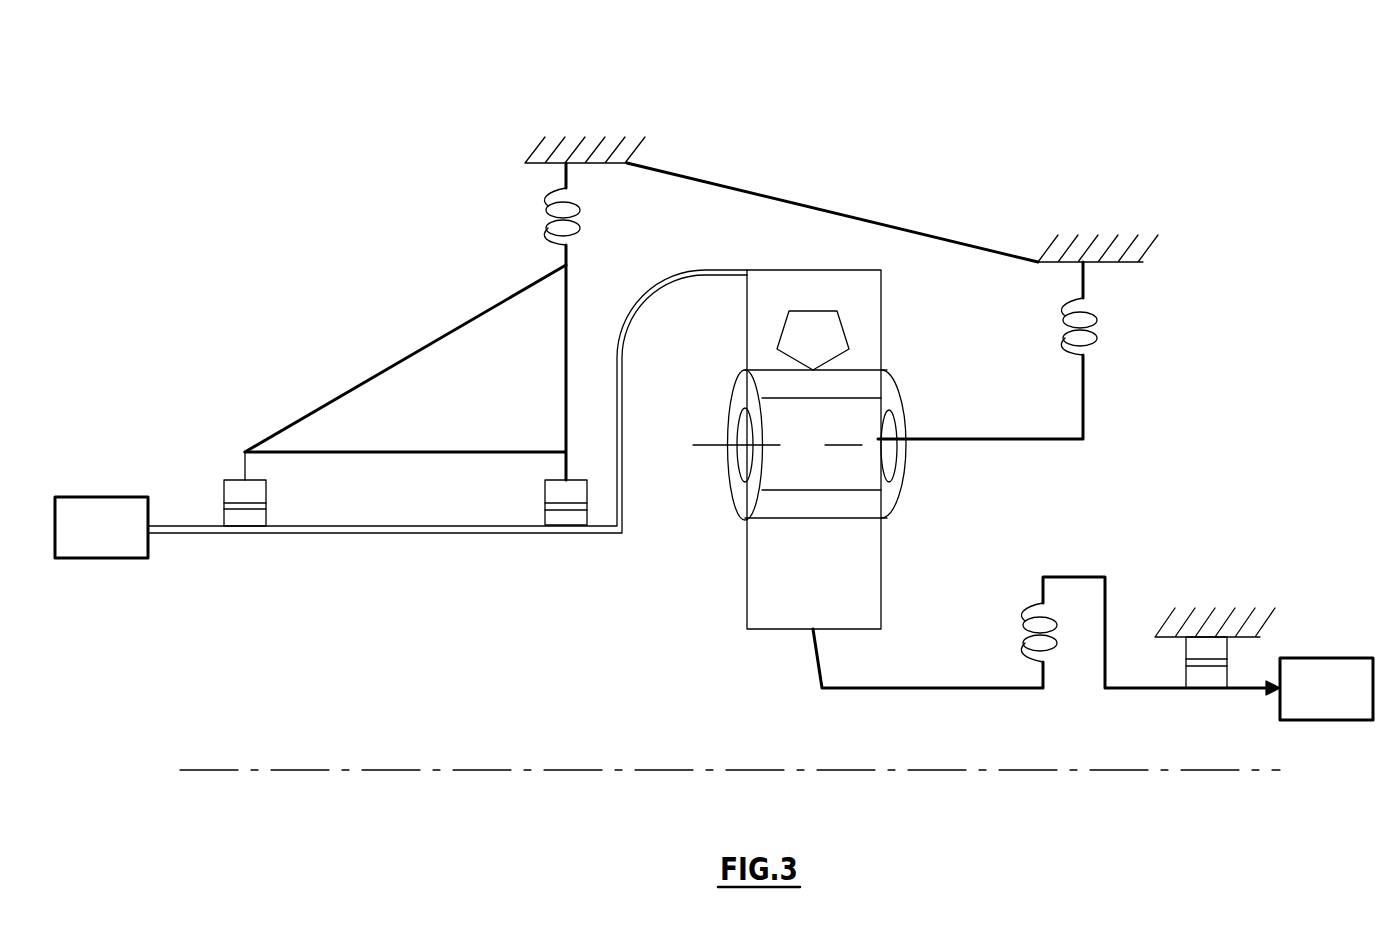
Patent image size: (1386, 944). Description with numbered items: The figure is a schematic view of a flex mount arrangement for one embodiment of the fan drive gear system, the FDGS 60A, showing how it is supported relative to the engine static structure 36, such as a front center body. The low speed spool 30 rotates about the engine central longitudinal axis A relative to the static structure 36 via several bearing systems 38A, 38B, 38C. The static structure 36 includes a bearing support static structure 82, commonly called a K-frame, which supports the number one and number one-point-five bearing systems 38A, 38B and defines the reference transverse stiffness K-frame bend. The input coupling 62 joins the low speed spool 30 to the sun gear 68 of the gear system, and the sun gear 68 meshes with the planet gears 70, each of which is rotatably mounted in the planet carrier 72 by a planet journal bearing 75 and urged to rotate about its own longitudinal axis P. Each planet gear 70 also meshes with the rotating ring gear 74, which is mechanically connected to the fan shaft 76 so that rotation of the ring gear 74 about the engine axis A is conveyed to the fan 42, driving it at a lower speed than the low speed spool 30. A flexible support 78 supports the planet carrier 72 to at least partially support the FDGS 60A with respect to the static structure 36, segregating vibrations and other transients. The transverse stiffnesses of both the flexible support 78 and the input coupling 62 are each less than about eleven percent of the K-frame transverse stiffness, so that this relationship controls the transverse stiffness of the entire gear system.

The low speed spool 30 is at (1341, 703).
The engine static structure 36 is at (1005, 218).
The number 1 bearing system 38A is at (230, 490).
The number 1.5 bearing system 38B is at (548, 493).
The bearing system 38C is at (1218, 650).
The fan 42 is at (115, 542).
The FDGS 60A is at (622, 668).
The input coupling 62 is at (911, 703).
The sun gear 68 is at (828, 593).
The planet gear 70 is at (890, 387).
The planet carrier 72 is at (922, 408).
The ring gear 74 is at (870, 323).
The planet journal bearing 75 is at (816, 457).
The fan shaft 76 is at (505, 532).
The flexible support 78 is at (1068, 440).
The bearing support static structure 82 is at (423, 333).
The longitudinal axis P is at (709, 444).
The engine central longitudinal axis A is at (557, 772).